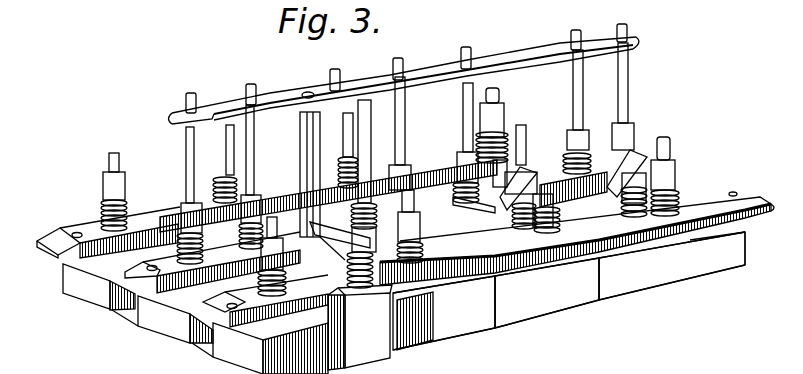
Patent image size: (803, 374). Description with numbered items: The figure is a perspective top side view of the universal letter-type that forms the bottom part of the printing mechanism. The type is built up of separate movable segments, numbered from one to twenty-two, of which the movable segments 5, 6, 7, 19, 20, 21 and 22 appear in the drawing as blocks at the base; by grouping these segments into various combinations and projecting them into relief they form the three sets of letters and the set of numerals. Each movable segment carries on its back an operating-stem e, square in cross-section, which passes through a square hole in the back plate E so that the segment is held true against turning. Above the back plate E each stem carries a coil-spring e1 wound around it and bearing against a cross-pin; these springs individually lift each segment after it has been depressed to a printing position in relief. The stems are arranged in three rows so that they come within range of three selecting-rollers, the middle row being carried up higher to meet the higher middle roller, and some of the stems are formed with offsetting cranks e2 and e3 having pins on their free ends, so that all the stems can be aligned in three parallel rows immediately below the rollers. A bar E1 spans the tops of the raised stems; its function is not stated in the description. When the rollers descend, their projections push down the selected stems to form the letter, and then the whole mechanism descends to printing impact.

The top cross bar E1 is at (428, 78).
The back plate E is at (178, 212).
The operating-stem e is at (102, 175).
The coil-spring e1 is at (100, 205).
The offsetting crank e2 is at (640, 150).
The offsetting crank e3 is at (336, 250).
The movable segment 5 is at (672, 266).
The movable segment 6 is at (547, 293).
The movable segment 7 is at (444, 313).
The movable segment 19 is at (270, 348).
The movable segment 20 is at (175, 319).
The movable segment 21 is at (99, 287).
The movable segment 22 is at (360, 327).